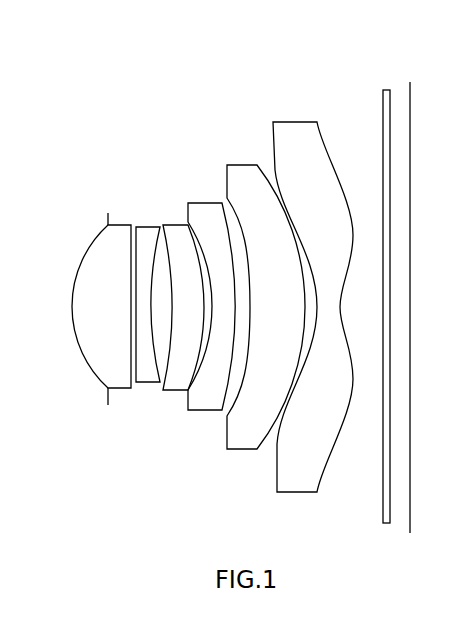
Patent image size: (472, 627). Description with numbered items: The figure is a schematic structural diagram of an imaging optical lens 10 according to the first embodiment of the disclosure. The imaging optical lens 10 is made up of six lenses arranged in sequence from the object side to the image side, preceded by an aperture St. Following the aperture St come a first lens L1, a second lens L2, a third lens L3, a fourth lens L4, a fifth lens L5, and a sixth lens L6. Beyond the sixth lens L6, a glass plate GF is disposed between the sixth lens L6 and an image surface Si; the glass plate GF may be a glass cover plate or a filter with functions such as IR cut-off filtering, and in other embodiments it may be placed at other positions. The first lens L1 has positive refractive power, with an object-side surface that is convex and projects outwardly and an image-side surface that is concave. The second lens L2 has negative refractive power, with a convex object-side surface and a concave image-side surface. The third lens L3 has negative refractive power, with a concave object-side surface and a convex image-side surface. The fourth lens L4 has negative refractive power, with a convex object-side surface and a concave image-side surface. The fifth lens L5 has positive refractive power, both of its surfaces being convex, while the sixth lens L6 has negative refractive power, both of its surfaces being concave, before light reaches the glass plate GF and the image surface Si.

The imaging optical lens 10 is at (256, 42).
The aperture St is at (101, 398).
The first lens L1 is at (103, 291).
The second lens L2 is at (148, 293).
The third lens L3 is at (183, 293).
The fourth lens L4 is at (211, 295).
The fifth lens L5 is at (266, 294).
The sixth lens L6 is at (313, 295).
The glass plate GF is at (387, 295).
The image surface Si is at (408, 298).